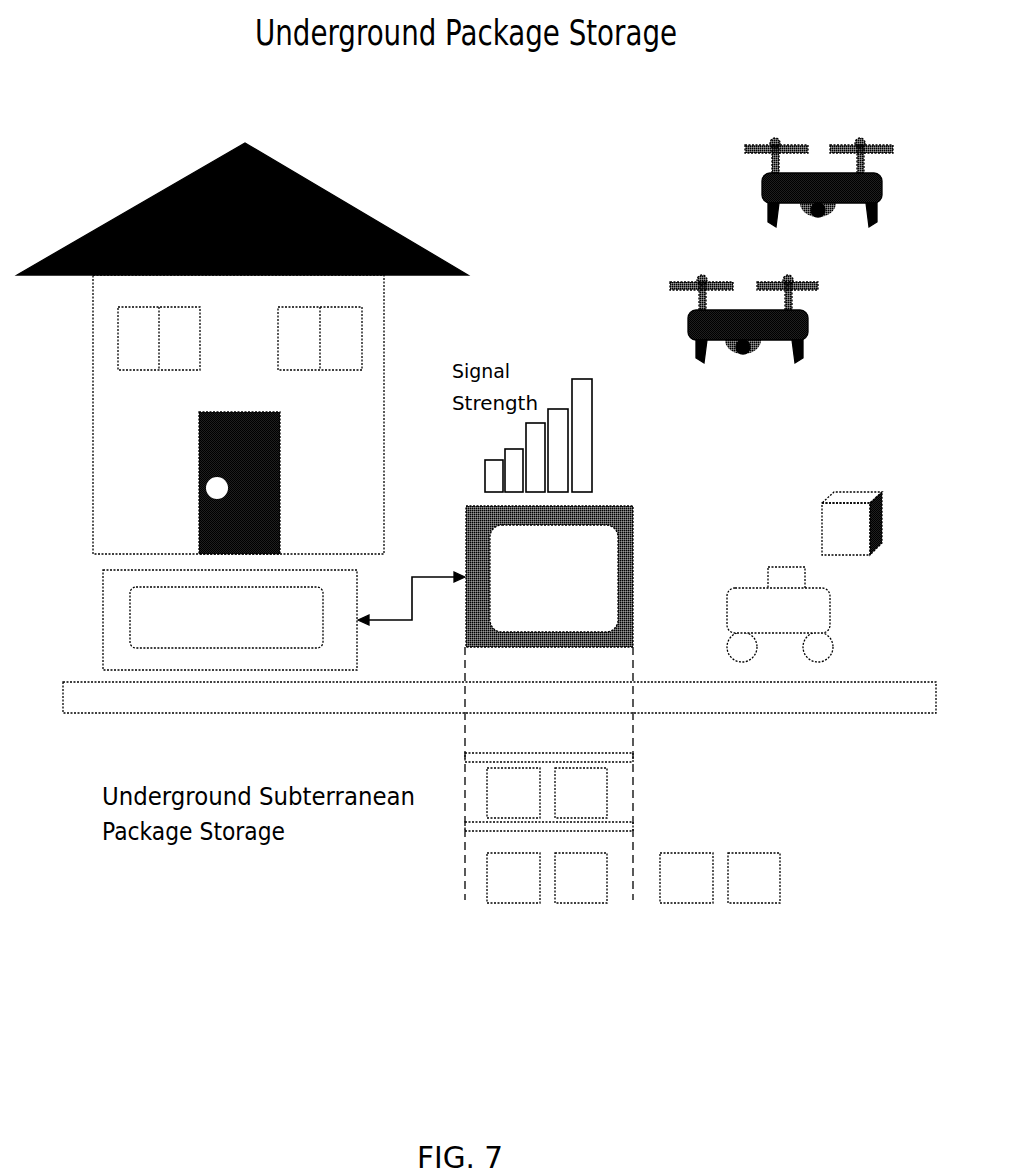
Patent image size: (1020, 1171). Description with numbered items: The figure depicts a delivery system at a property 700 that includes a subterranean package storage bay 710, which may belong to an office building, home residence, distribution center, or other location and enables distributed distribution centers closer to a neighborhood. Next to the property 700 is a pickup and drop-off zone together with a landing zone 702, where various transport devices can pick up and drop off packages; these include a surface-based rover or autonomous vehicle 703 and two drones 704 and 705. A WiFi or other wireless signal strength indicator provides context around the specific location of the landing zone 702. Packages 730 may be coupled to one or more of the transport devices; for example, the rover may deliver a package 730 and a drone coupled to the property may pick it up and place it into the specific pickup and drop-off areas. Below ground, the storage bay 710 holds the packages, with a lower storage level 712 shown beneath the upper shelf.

The property 700 is at (377, 523).
The landing zone 702 is at (533, 598).
The autonomous vehicle 703 is at (830, 640).
The drone 704 is at (872, 220).
The drone 705 is at (800, 355).
The subterranean package storage bay 710 is at (637, 730).
The underground storage lower shelf 712 is at (640, 797).
The package 730 is at (352, 637).